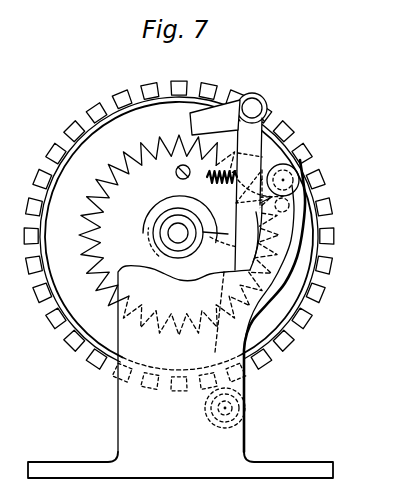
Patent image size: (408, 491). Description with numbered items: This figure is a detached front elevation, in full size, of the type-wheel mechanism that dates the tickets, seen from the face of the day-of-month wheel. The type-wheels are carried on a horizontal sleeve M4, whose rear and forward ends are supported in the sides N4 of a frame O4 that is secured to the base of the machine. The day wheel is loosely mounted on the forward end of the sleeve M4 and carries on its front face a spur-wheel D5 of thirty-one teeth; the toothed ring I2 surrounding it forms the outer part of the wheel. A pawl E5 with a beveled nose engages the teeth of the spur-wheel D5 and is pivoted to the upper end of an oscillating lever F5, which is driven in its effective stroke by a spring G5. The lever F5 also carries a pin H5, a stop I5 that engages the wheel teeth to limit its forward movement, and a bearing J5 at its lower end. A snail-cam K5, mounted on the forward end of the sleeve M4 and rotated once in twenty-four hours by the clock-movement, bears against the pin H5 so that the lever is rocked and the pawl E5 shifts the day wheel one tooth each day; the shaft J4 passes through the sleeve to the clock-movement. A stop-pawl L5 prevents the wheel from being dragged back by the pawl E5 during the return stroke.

The toothed ring wheel I2 is at (179, 225).
The sides of frame N4 is at (178, 385).
The spur-wheel D5 is at (179, 235).
The horizontal sleeve M4 is at (211, 306).
The frame O4 is at (180, 465).
The snail-cam K5 is at (153, 217).
The shaft J4 is at (178, 239).
The oscillating lever F5 is at (259, 181).
The pawl E5 is at (215, 117).
The spring G5 is at (206, 175).
The pin H5 is at (254, 233).
The stop-pawl L5 is at (268, 157).
The stop I5 is at (290, 204).
The bearing J5 is at (246, 404).